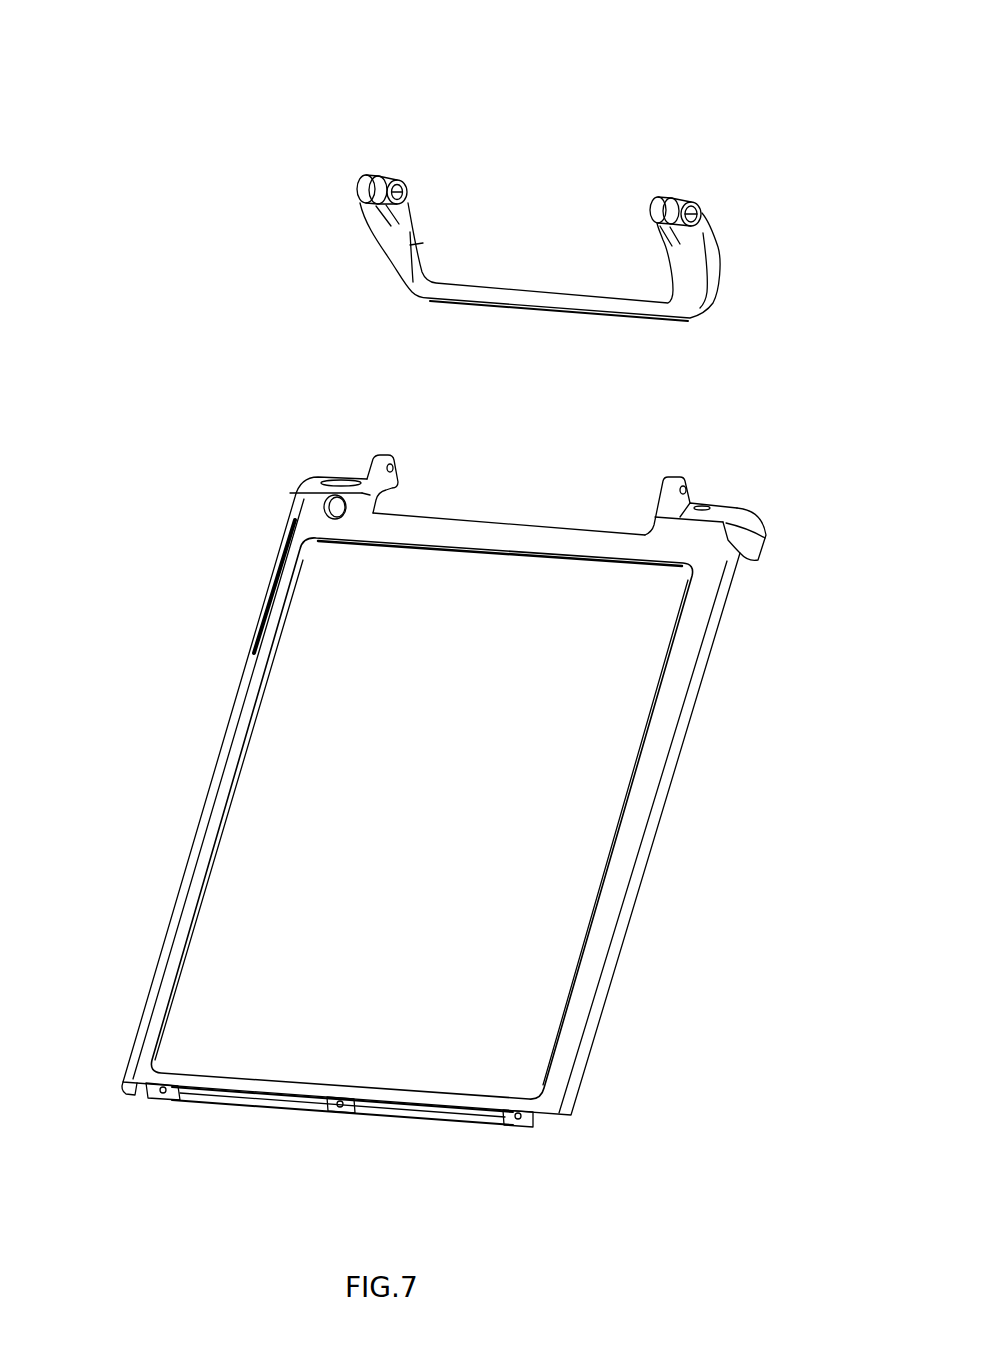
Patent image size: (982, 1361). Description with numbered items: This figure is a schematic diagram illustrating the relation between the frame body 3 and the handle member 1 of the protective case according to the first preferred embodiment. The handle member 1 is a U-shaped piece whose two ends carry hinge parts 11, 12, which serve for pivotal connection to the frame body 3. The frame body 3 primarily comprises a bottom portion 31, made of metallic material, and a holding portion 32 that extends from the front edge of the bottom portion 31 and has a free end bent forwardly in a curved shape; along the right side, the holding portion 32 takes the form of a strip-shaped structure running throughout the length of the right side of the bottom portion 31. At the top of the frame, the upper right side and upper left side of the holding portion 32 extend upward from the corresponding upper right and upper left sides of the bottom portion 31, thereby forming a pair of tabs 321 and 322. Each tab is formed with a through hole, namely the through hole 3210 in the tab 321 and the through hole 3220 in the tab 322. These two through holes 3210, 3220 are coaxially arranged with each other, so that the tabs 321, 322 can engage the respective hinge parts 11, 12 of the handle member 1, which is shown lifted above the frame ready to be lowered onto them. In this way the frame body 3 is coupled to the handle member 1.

The handle member 1 is at (478, 166).
The hinge part 11 is at (683, 197).
The hinge part 12 is at (357, 183).
The frame body 3 is at (440, 779).
The bottom portion 31 is at (487, 538).
The holding portion 32 is at (123, 1087).
The tab 321 is at (710, 449).
The through hole 3210 is at (688, 490).
The tab 322 is at (356, 398).
The through hole 3220 is at (393, 466).